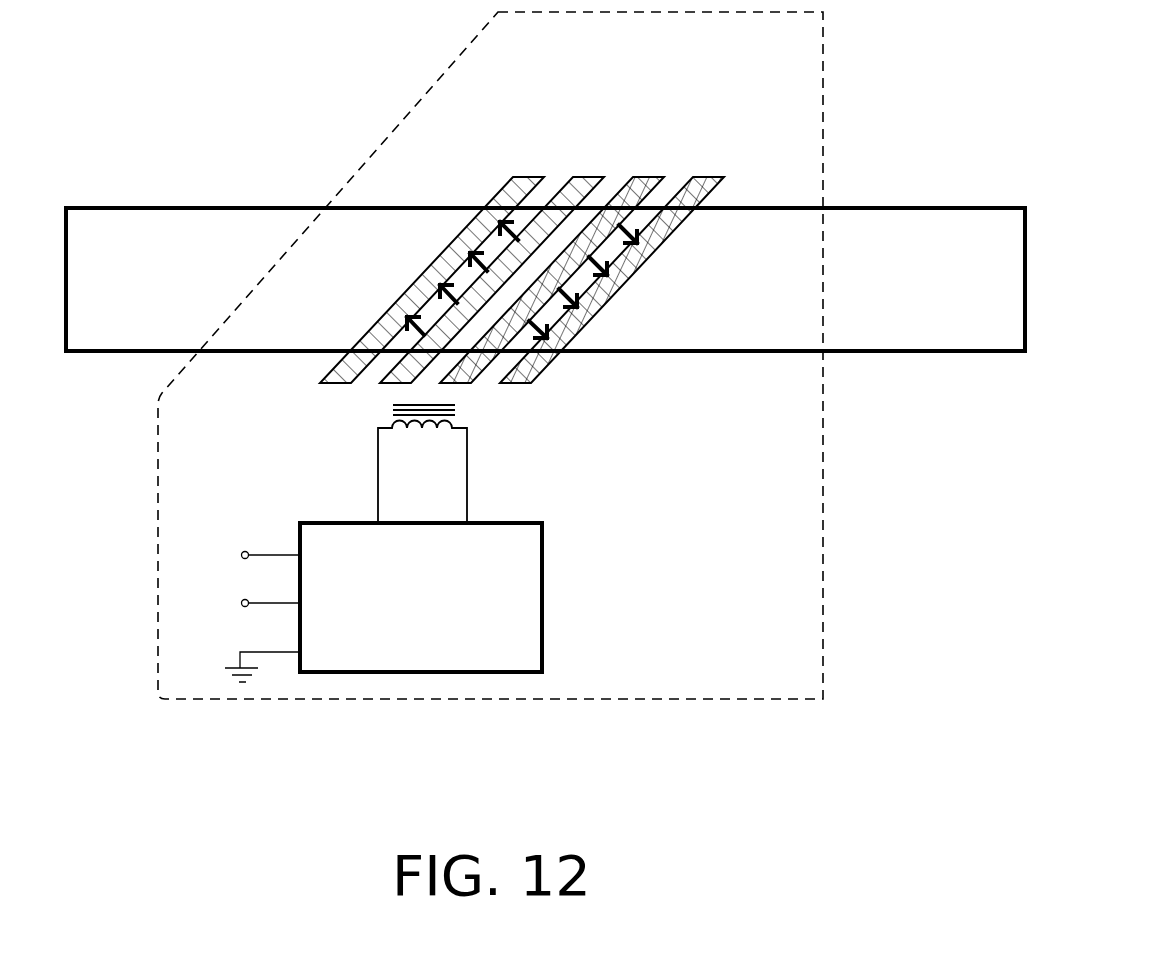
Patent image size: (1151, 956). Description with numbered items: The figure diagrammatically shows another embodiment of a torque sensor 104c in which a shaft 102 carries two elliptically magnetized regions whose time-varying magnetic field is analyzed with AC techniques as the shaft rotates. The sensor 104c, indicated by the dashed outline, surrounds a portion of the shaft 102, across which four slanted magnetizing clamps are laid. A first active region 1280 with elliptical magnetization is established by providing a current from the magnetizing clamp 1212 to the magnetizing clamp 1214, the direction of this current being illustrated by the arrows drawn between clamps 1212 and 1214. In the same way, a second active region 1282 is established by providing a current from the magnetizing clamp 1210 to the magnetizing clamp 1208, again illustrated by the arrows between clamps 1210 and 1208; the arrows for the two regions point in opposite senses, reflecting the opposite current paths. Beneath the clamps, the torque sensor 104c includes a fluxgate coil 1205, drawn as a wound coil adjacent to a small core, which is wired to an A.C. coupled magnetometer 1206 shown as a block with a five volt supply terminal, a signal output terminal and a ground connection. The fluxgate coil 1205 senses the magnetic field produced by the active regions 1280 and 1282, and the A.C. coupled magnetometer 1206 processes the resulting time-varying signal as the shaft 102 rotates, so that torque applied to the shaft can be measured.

The torque sensor 104c is at (823, 48).
The pipe / conduit 102 is at (1025, 248).
The magnetizing clamp 1214 is at (323, 375).
The magnetizing clamp 1212 is at (395, 385).
The magnetizing clamp 1210 is at (466, 385).
The magnetizing clamp 1208 is at (548, 370).
The first active region 1280 is at (523, 211).
The second active region 1282 is at (646, 211).
The fluxgate coil 1205 is at (455, 428).
The A.C. coupled magnetometer 1206 is at (542, 617).